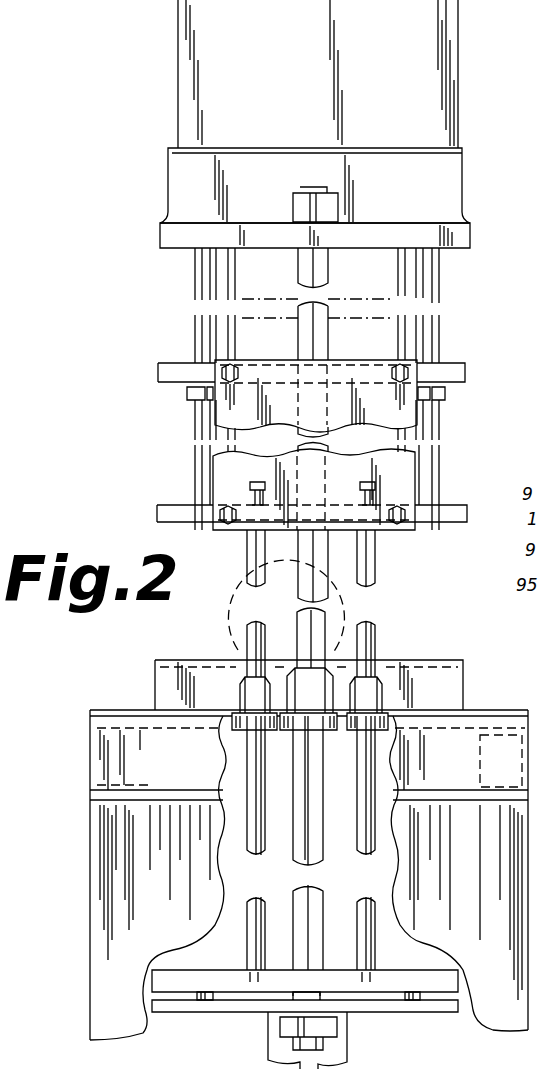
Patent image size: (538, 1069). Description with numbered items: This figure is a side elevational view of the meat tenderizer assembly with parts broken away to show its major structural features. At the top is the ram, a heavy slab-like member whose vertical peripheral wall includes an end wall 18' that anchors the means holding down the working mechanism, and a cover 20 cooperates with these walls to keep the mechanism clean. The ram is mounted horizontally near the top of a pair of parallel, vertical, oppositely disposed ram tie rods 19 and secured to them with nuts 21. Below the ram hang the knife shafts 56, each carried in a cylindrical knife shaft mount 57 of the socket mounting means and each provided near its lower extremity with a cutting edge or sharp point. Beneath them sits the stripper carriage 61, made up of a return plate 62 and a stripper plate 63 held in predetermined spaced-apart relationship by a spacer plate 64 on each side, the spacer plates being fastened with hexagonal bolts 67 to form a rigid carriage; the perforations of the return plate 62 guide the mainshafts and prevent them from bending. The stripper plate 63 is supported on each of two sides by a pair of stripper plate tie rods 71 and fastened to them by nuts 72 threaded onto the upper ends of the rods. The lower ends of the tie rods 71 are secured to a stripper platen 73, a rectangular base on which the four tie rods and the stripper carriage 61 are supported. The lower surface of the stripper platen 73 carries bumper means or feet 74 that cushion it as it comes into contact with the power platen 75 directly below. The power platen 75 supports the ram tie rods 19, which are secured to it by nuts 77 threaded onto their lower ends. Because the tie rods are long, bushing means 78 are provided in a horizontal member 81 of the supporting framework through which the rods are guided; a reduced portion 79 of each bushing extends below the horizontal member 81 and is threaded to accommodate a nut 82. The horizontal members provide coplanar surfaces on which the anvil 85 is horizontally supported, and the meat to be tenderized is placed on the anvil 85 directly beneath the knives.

The end wall 18' is at (315, 176).
The ram tie rod 19 is at (317, 331).
The cover 20 is at (187, 34).
The nut 21 is at (333, 204).
The knife shaft 56 is at (440, 455).
The cylindrical knife shaft mount 57 is at (445, 394).
The stripper carriage 61 is at (455, 356).
The return plate 62 is at (160, 373).
The stripper plate 63 is at (160, 508).
The spacer plate 64 is at (228, 470).
The hexagonal bolt 67 is at (232, 372).
The stripper plate tie rod 71 is at (262, 585).
The nut 72 is at (262, 470).
The stripper platen 73 is at (405, 975).
The bumper means or feet 74 is at (202, 1000).
The power platen 75 is at (455, 1012).
The nut 77 is at (340, 1026).
The bushing means 78 is at (372, 690).
The reduced portion 79 is at (382, 714).
The horizontal member 81 is at (128, 710).
The nut 82 is at (222, 749).
The anvil 85 is at (440, 660).